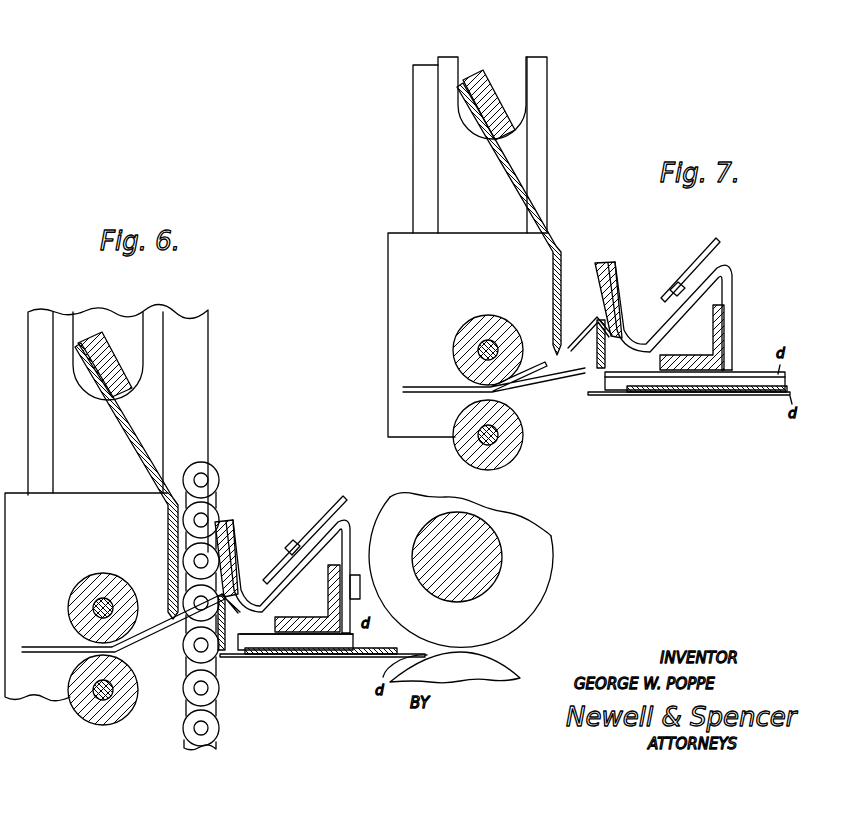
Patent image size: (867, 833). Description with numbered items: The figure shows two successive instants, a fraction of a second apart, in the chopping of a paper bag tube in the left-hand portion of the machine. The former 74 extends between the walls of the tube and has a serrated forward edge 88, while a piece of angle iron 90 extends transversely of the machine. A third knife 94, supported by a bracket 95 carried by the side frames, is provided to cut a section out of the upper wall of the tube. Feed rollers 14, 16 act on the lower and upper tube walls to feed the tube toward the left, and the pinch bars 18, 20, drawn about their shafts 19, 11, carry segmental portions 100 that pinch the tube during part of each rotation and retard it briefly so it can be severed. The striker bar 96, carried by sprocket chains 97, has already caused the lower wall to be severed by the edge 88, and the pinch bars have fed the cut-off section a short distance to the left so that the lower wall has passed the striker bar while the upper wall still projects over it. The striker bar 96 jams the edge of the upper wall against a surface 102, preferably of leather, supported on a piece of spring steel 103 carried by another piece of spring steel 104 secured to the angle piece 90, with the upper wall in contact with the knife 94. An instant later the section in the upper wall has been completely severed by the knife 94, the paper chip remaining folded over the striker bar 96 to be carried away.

In FIG. 6, the bracket 95 is at (113, 362).
In FIG. 6, the third knife 94 is at (168, 522).
In FIG. 7, the third knife 94 is at (552, 297).
In FIG. 6, the pinch bar 20 is at (80, 588).
In FIG. 6, the roller shaft 19 is at (96, 610).
In FIG. 7, the roller shaft 19 is at (480, 346).
In FIG. 6, the pinch bar 18 is at (83, 712).
In FIG. 6, the lower roller shaft 11 is at (100, 688).
In FIG. 6, the segmental portion 100 is at (90, 646).
In FIG. 7, the segmental portion 100 is at (460, 374).
In FIG. 6, the striker bar 96 is at (225, 624).
In FIG. 7, the striker bar 96 is at (606, 364).
In FIG. 6, the sprocket chain 97 is at (214, 489).
In FIG. 6, the surface 102 is at (230, 545).
In FIG. 7, the surface 102 is at (617, 273).
In FIG. 6, the piece of spring steel 103 is at (242, 553).
In FIG. 7, the piece of spring steel 103 is at (712, 251).
In FIG. 6, the piece of spring steel 104 is at (338, 520).
In FIG. 7, the piece of spring steel 104 is at (734, 312).
In FIG. 6, the angle iron 90 is at (297, 618).
In FIG. 7, the angle iron 90 is at (686, 356).
In FIG. 6, the serrated forward edge 88 is at (252, 652).
In FIG. 7, the serrated forward edge 88 is at (628, 394).
In FIG. 6, the former 74 is at (367, 655).
In FIG. 7, the former 74 is at (757, 396).
In FIG. 6, the feed roller 16 is at (540, 546).
In FIG. 6, the feed roller 14 is at (505, 673).